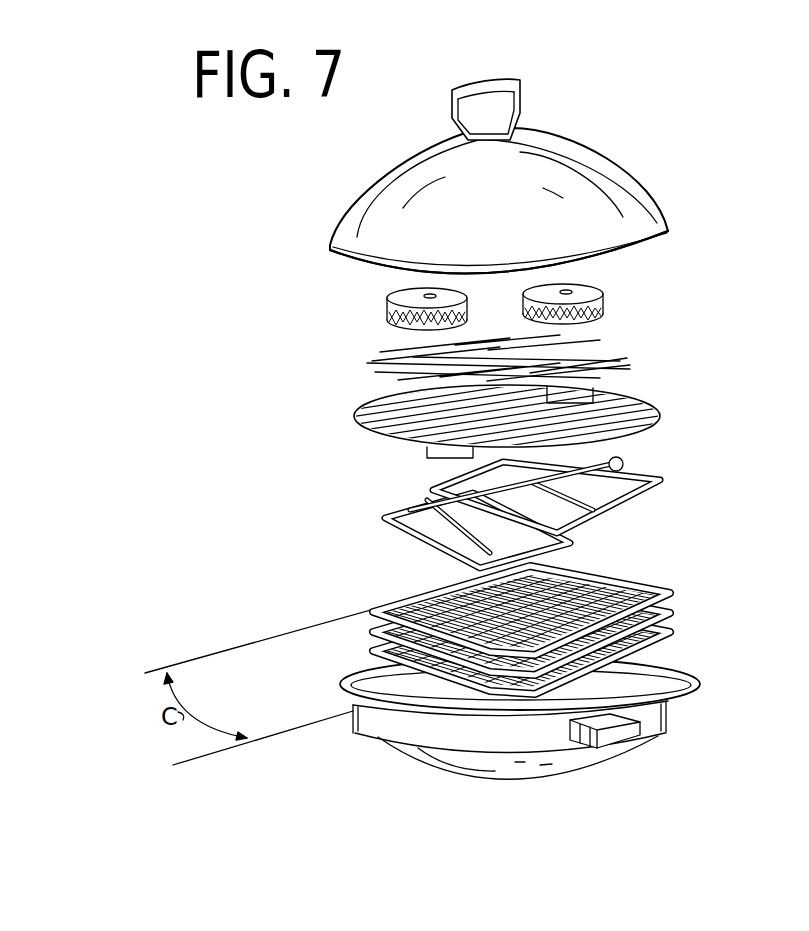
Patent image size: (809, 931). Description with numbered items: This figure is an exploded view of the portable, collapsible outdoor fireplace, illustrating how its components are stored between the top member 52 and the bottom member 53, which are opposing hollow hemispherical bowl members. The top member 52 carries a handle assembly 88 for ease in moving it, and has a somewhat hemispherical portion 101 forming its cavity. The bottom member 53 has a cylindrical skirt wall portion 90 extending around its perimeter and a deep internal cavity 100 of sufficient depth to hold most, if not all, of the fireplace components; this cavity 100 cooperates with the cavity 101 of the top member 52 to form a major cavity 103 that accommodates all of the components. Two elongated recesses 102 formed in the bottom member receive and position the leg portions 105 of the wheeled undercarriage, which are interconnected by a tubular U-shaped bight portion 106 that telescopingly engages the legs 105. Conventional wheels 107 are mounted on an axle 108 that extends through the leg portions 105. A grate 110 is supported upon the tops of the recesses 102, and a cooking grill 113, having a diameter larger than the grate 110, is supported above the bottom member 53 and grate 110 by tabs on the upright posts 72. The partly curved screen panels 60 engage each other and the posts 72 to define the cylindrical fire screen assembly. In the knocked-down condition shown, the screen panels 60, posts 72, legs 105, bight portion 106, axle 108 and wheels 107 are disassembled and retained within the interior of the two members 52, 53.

The top member 52 is at (627, 203).
The bottom member 53 is at (582, 752).
The screen panels 60 is at (648, 573).
The upright posts 72 is at (383, 612).
The handle assembly 88 is at (520, 100).
The skirt wall portion 90 is at (682, 722).
The internal cavity 100 is at (622, 692).
The hemispherical portion 101 is at (332, 253).
The elongated recesses 102 is at (415, 757).
The major cavity 103 is at (495, 409).
The leg portions 105 is at (385, 518).
The U-shaped bight portion 106 is at (437, 487).
The wheels 107 is at (600, 297).
The axle 108 is at (622, 462).
The grate 110 is at (630, 367).
The cooking grill 113 is at (657, 408).